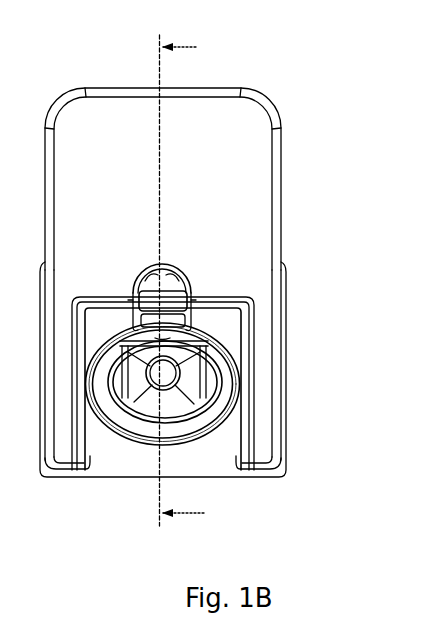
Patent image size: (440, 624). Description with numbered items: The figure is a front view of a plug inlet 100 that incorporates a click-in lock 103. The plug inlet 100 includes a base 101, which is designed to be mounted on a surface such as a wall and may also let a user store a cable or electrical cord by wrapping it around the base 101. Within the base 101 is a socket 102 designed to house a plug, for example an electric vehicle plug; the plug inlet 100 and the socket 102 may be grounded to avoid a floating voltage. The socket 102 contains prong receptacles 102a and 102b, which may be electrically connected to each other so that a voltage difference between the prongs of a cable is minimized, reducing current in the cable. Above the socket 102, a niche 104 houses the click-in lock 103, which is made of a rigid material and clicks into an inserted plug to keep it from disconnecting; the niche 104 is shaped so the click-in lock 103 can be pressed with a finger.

The plug inlet 100 is at (211, 297).
The base 101 is at (163, 282).
The socket 102 is at (180, 393).
The prong receptacle 102a is at (182, 355).
The prong receptacle 102b is at (158, 385).
The click-in lock 103 is at (198, 307).
The niche 104 is at (186, 268).